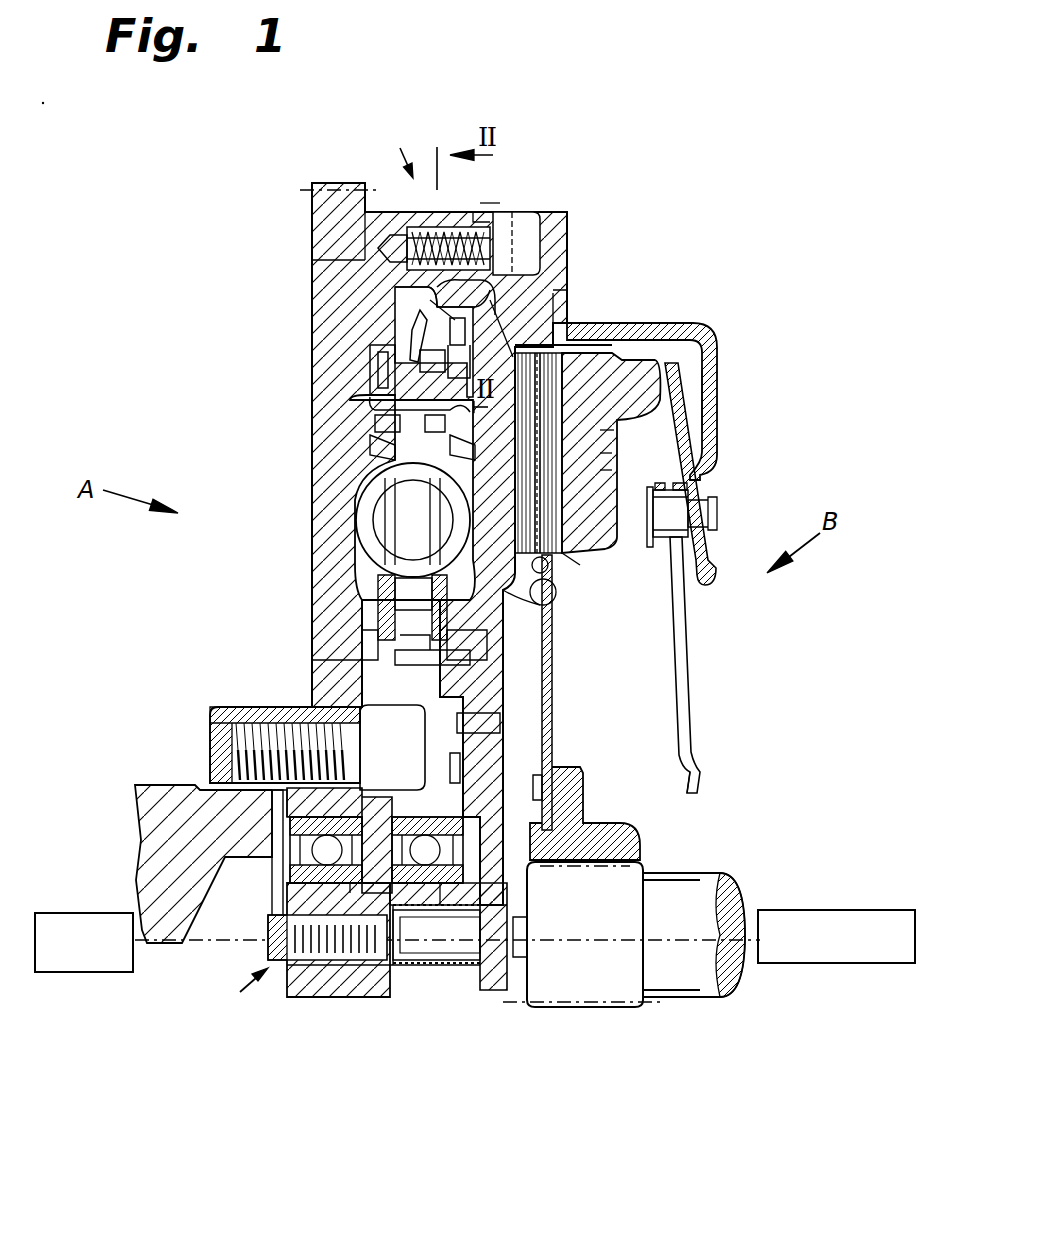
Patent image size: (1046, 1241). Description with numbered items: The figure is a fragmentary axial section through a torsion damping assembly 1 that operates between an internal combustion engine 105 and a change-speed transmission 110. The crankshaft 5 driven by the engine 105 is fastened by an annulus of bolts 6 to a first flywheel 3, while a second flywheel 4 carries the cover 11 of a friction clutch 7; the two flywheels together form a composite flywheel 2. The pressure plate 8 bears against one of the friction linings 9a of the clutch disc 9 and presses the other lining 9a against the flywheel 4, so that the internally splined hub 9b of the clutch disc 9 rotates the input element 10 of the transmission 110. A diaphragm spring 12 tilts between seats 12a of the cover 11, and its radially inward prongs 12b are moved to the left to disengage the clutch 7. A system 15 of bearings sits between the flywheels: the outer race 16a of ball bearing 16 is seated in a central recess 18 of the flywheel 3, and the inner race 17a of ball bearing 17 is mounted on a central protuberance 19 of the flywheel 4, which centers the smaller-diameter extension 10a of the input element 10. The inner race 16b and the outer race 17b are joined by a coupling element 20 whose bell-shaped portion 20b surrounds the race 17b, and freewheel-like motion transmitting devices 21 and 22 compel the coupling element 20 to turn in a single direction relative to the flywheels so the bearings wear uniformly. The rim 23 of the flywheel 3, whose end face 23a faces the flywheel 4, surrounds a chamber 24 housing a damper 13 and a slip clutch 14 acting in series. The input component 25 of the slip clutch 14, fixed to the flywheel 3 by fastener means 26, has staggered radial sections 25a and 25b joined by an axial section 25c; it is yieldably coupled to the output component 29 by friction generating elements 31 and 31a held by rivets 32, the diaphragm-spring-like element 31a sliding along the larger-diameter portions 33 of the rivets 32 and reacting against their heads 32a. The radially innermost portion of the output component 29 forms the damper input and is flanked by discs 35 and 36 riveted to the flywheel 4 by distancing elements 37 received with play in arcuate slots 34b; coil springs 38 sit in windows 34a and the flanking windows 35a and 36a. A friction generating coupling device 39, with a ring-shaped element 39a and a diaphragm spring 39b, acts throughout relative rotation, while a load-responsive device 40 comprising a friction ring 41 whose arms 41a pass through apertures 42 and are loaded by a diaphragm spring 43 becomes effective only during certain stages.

The torsion damping assembly 1 is at (400, 148).
The composite flywheel 2 is at (432, 212).
The first flywheel 3 is at (330, 300).
The second flywheel 4 is at (545, 320).
The crankshaft 5 is at (150, 832).
The bolts 6 is at (245, 733).
The friction clutch 7 is at (703, 324).
The pressure plate 8 is at (643, 390).
The clutch disc 9 is at (555, 708).
The friction linings 9a is at (548, 567).
The internally splined hub 9b is at (640, 832).
The input element 10 is at (572, 913).
The smaller-diameter extension 10a is at (423, 947).
The cover 11 is at (712, 395).
The diaphragm spring 12 is at (684, 648).
The seats 12a is at (688, 483).
The prongs 12b is at (698, 780).
The damper 13 is at (350, 518).
The slip clutch 14 is at (390, 352).
The system of bearings 15 is at (240, 992).
The antifriction ball bearing 16 is at (278, 878).
The outer race 16a is at (300, 835).
The inner race 16b is at (352, 888).
The antifriction ball bearing 17 is at (445, 850).
The inner race 17a is at (448, 885).
The outer race 17b is at (418, 823).
The recess 18 is at (297, 753).
The protuberance 19 is at (447, 968).
The coupling element 20 is at (323, 962).
The bell-shaped portion 20b is at (440, 793).
The motion transmitting device 21 is at (274, 900).
The motion transmitting device 22 is at (461, 780).
The rim 23 is at (422, 213).
The end face 23a is at (473, 212).
The chamber 24 is at (395, 293).
The input component 25 is at (496, 300).
The radially extending section 25a is at (480, 204).
The radially innermost section 25b is at (437, 307).
The axially extending section 25c is at (350, 245).
The fastener means 26 is at (521, 217).
The output component 29 is at (395, 390).
The friction generating element 31 is at (545, 290).
The friction generating element 31a is at (430, 300).
The rivets 32 is at (570, 323).
The rivet heads 32a is at (400, 333).
The larger-diameter portions 33 is at (395, 375).
The windows 34a is at (390, 482).
The arcuate slot-shaped openings 34b is at (490, 650).
The disc 35 is at (395, 620).
The windows 35a is at (385, 538).
The disc 36 is at (540, 610).
The windows 36a is at (580, 565).
The distancing elements 37 is at (398, 655).
The coil spring 38 is at (480, 503).
The friction generating coupling device 39 is at (365, 640).
The ring-shaped friction generating element 39a is at (556, 594).
The diaphragm spring 39b is at (378, 592).
The load-responsive friction generating coupling device 40 is at (513, 418).
The friction ring 41 is at (480, 447).
The axially extending arms 41a is at (400, 447).
The apertures 42 is at (480, 462).
The diaphragm spring 43 is at (395, 422).
The internal combustion engine 105 is at (85, 962).
The change-speed transmission 110 is at (800, 956).